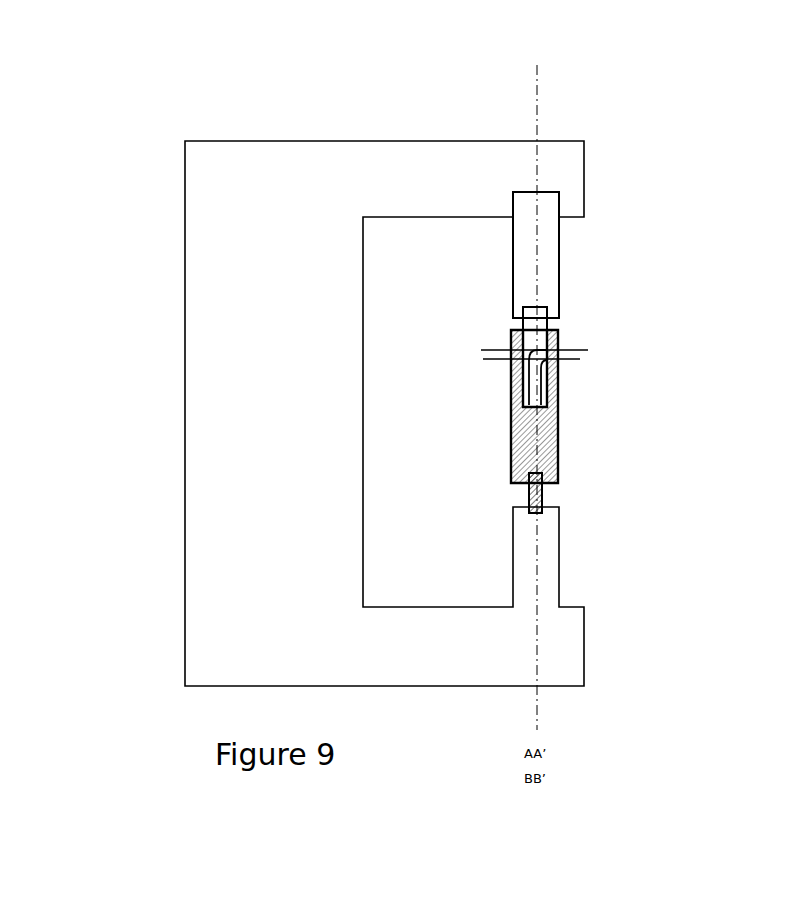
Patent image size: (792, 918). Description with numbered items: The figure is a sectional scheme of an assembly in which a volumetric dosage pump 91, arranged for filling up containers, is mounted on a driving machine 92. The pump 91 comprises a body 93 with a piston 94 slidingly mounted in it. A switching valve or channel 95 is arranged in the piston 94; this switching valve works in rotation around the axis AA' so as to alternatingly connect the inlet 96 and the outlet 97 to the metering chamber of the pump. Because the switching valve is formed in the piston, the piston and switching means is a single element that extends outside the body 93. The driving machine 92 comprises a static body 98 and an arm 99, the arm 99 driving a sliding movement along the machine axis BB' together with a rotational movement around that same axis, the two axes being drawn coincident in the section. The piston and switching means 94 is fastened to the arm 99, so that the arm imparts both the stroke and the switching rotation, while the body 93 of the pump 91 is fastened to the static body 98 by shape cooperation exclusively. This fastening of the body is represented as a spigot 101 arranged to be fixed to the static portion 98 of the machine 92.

The volumetric dosage pump 91 is at (388, 291).
The driving machine 92 is at (185, 208).
The body 93 is at (559, 445).
The piston 94 is at (547, 318).
The switching valve 95 is at (523, 363).
The inlet 96 is at (485, 350).
The outlet 97 is at (580, 359).
The static body 98 is at (303, 395).
The arm 99 is at (537, 259).
The spigot 101 is at (513, 492).